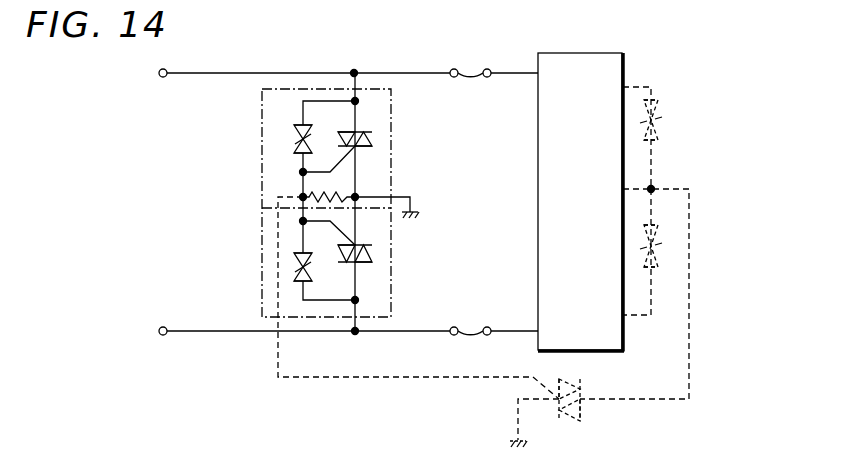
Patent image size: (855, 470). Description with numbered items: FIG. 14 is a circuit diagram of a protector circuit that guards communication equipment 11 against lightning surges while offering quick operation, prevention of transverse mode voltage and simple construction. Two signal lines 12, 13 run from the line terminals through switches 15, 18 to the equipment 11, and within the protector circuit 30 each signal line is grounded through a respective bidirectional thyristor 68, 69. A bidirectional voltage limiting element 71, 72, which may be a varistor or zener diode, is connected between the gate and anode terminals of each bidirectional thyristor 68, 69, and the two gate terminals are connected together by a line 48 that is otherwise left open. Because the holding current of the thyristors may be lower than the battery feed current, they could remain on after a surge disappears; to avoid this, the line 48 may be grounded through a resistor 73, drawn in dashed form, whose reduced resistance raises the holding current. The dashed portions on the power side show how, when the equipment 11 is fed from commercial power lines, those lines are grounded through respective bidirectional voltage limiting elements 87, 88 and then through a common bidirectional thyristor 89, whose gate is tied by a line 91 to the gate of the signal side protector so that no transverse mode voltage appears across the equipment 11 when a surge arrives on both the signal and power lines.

The equipment 11 is at (608, 52).
The signal line 12 is at (198, 72).
The signal line 13 is at (198, 334).
The switch in first line 15 is at (471, 74).
The switch in second line 18 is at (471, 332).
The protection circuit 30 is at (392, 96).
The line 48 is at (300, 207).
The bidirectional thyristor 68 is at (373, 139).
The bidirectional thyristor 69 is at (373, 257).
The bidirectional voltage limiting element 71 is at (294, 137).
The bidirectional voltage limiting element 72 is at (294, 257).
The resistor 73 is at (318, 192).
The bidirectional voltage limiting element 87 is at (651, 100).
The bidirectional voltage limiting element 88 is at (651, 225).
The bidirectional thyristor 89 is at (576, 422).
The line 91 is at (331, 379).